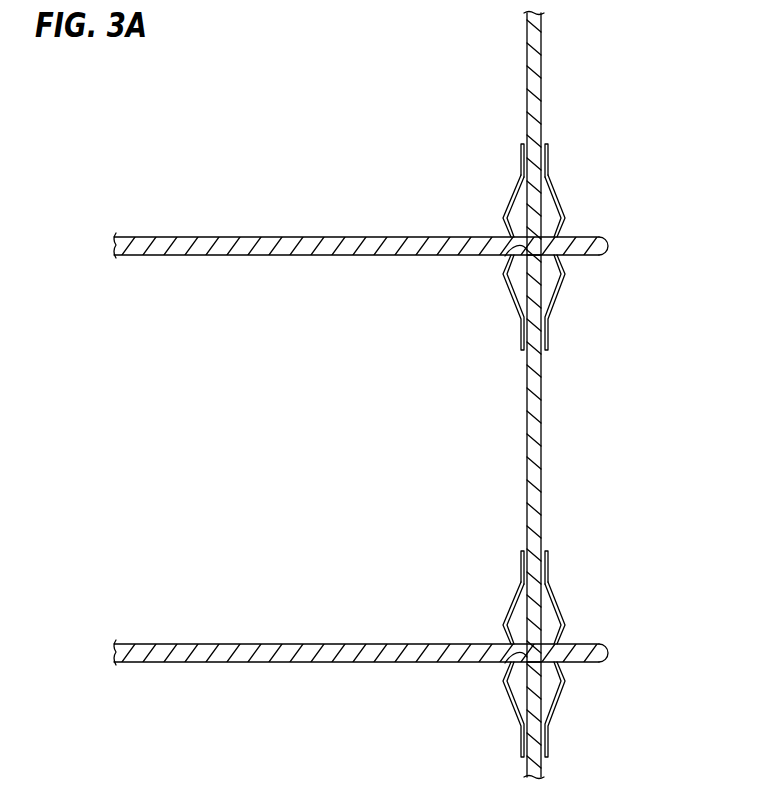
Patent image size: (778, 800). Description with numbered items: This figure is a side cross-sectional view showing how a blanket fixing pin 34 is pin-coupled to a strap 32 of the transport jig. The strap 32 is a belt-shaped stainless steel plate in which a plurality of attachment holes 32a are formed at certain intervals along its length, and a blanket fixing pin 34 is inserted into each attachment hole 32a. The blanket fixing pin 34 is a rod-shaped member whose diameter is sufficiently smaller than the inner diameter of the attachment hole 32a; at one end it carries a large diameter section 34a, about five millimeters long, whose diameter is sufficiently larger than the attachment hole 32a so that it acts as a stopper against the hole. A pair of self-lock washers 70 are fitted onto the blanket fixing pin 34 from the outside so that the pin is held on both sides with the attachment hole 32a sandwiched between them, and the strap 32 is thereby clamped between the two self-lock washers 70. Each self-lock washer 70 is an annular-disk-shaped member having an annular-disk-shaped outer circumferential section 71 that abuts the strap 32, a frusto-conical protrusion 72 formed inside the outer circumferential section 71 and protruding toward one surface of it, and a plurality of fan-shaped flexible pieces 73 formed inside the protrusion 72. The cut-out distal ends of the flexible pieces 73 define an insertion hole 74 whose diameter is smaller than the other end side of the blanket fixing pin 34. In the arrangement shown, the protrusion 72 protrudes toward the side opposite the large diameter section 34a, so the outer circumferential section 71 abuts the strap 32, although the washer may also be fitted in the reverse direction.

The strap 32 is at (542, 60).
The attachment hole 32a is at (507, 254).
The blanket fixing pin 34 is at (200, 237).
The large diameter section 34a is at (587, 240).
The self-lock washer 70 is at (523, 429).
The outer circumferential section 71 is at (518, 152).
The protrusion 72 is at (513, 202).
The flexible pieces 73 is at (503, 270).
The insertion hole 74 is at (512, 245).